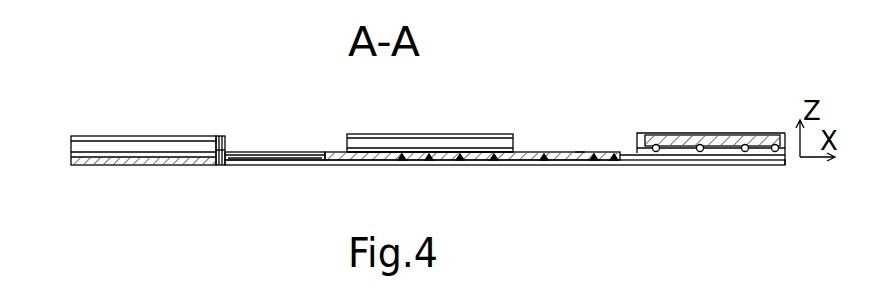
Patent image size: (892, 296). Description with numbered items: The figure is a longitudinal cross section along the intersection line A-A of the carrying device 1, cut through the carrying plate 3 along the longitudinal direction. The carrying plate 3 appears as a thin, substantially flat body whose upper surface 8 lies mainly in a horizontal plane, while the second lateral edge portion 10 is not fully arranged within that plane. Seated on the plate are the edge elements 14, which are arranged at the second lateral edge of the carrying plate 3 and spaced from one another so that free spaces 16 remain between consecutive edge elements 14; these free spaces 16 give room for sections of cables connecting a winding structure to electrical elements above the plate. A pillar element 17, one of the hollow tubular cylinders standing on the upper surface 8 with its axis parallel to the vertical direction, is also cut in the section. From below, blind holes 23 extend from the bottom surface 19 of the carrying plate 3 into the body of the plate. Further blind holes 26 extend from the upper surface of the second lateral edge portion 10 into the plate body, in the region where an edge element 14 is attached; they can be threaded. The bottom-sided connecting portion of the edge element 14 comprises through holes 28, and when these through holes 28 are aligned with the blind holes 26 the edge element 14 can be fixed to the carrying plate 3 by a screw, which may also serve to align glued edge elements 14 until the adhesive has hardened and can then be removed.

The carrying device 1 is at (62, 184).
The carrying plate 3 is at (786, 160).
The upper surface 8 is at (541, 152).
The second lateral edge portion 10 is at (313, 152).
The edge element 14 is at (153, 135).
The free space 16 is at (282, 150).
The pillar element 17 is at (226, 135).
The bottom surface 19 is at (535, 162).
The blind hole 23 is at (401, 160).
The blind hole 26 is at (430, 161).
The through hole 28 is at (493, 153).